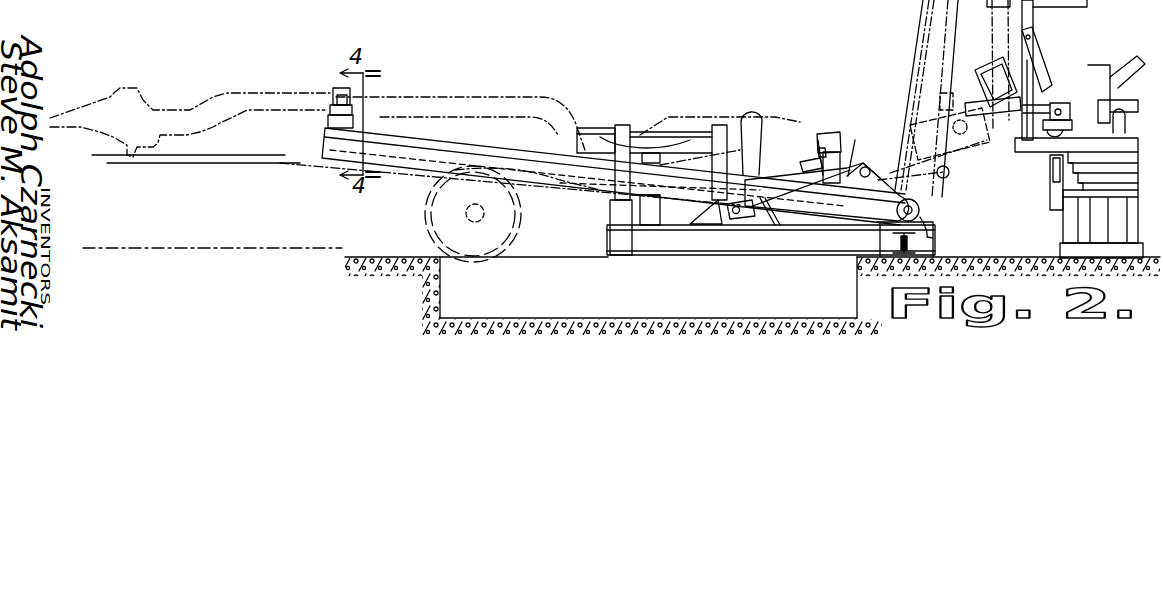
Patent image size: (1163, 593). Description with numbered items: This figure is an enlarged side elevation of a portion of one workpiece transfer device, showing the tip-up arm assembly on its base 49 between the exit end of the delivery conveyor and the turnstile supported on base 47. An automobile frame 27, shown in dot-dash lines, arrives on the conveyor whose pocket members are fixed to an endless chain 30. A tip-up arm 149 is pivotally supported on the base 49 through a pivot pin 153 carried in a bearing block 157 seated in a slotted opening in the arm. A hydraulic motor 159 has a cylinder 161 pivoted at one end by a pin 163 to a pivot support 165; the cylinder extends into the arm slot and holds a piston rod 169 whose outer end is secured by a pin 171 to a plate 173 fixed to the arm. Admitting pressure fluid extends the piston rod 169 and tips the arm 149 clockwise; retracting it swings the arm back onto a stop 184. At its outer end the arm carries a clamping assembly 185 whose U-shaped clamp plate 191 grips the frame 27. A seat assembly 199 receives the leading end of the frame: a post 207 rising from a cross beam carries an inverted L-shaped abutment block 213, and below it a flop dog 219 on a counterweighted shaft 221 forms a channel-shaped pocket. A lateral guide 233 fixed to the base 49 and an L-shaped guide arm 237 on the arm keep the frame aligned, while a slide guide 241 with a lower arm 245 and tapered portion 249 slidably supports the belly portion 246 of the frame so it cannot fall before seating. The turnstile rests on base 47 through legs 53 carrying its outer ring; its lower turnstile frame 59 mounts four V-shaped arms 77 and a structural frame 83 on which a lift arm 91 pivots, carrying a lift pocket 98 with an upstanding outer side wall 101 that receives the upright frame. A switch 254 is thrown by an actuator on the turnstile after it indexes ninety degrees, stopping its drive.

The automobile frame 27 is at (440, 92).
The endless chain 30 is at (283, 167).
The base 49 is at (598, 240).
The pivot pin 153 is at (936, 235).
The clamp plate 191 is at (338, 88).
The workpiece frame clamping assembly 185 is at (320, 110).
The tip-up arm 149 is at (525, 162).
The lower arm 245 is at (588, 172).
The belly portion 246 is at (575, 136).
The stop 184 is at (621, 247).
The lateral guide 233 is at (599, 131).
The tapered portion 249 is at (662, 112).
The slide guide 241 is at (693, 126).
The guide arm 237 is at (753, 108).
The base 47 is at (1063, 251).
The pivot support 165 is at (715, 216).
The pin 163 is at (738, 206).
The cylinder 161 is at (770, 218).
The hydraulic motor 159 is at (796, 216).
The piston rod 169 is at (842, 205).
The plate 173 is at (868, 170).
The pin 171 is at (850, 200).
The V-shaped arm 77 is at (1043, 20).
The lift arm 91 is at (1046, 90).
The outer side wall 101 is at (984, 80).
The lift pocket 98 is at (988, 70).
The structural frame 83 is at (1078, 124).
The lower turnstile frame 59 is at (1026, 150).
The switch 254 is at (1056, 176).
The leg 53 is at (1063, 227).
The bearing block 157 is at (985, 198).
The flop dog 219 is at (838, 137).
The shaft 221 is at (803, 165).
The seat assembly 199 is at (814, 85).
The abutment block 213 is at (818, 140).
The post 207 is at (855, 140).